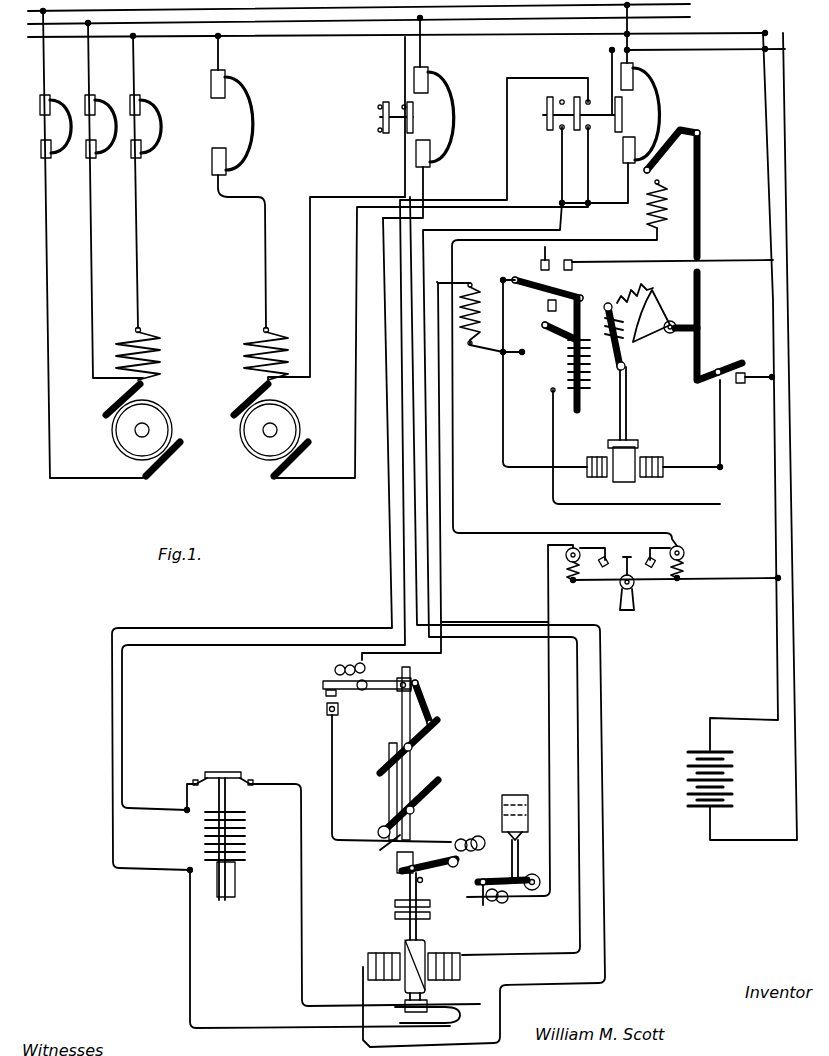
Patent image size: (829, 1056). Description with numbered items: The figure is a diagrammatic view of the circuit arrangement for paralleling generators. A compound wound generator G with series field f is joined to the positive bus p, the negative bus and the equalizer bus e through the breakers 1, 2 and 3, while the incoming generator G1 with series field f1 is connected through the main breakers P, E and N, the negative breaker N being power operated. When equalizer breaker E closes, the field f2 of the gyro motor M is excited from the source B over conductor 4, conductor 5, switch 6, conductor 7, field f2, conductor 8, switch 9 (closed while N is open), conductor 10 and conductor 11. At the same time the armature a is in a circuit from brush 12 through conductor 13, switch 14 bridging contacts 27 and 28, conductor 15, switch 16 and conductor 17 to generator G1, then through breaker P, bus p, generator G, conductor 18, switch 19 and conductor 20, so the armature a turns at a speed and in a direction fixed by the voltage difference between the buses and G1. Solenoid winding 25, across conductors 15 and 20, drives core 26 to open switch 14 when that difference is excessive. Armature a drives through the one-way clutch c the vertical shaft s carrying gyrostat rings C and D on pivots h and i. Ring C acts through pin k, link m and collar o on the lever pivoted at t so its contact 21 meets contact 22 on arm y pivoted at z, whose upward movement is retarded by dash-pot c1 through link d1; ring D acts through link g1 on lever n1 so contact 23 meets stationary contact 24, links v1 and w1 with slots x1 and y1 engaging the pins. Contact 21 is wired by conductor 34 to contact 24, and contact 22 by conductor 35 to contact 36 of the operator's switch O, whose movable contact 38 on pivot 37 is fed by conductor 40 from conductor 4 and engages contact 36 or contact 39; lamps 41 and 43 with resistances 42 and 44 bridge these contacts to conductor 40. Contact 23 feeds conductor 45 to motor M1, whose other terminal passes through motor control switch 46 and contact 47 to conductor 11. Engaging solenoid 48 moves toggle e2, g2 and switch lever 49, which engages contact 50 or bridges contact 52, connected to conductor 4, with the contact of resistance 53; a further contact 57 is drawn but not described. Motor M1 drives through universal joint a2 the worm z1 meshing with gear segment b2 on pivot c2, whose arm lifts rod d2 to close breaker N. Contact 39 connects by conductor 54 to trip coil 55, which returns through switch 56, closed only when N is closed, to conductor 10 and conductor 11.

The automatic circuit breaker 1 is at (52, 156).
The automatic circuit breaker 2 is at (97, 156).
The automatic circuit breaker 3 is at (144, 152).
The positive breaker P is at (246, 104).
The positive bus p is at (266, 36).
The equalizer bus e is at (354, 19).
The series field winding f is at (160, 340).
The series field winding f1 is at (250, 345).
The compound wound generator G is at (131, 430).
The generator G1 is at (277, 430).
The conductor 17 is at (356, 236).
The conductor 18 is at (631, 14).
The conductor 10 is at (720, 50).
The conductor 5 is at (404, 50).
The conductor 4 is at (764, 90).
The conductor 11 is at (790, 295).
The source of current B is at (690, 768).
The equalizer breaker E is at (450, 118).
The switch 19 is at (382, 120).
The switch 6 is at (414, 118).
The conductor 7 is at (421, 170).
The conductor 20 is at (388, 262).
The conductor 15 is at (520, 78).
The switch 9 is at (546, 112).
The switch 16 is at (572, 135).
The switch 56 is at (615, 122).
The negative breaker N is at (657, 96).
The vertically extending rod d2 is at (700, 212).
The trip coil 55 is at (672, 200).
The conductor 54 is at (650, 222).
The conductor 8 is at (514, 230).
The conductor 45 is at (453, 248).
The resistance 53 is at (472, 300).
The switch lever 49 is at (548, 280).
The contact 57 is at (541, 263).
The contact 52 is at (572, 261).
The contact 50 is at (548, 308).
The toggle member e2 is at (555, 334).
The engaging solenoid 48 is at (570, 372).
The electric motor M1 is at (638, 447).
The universal joint a2 is at (627, 372).
The toggle member g2 is at (610, 305).
The worm z1 is at (620, 312).
The gear segment b2 is at (654, 296).
The pivot c2 is at (669, 340).
The motor control switch 46 is at (736, 368).
The contact 47 is at (738, 383).
The lamp 41 is at (565, 555).
The resistance 42 is at (570, 578).
The contact 36 is at (596, 568).
The lamp 43 is at (686, 550).
The resistance 44 is at (690, 571).
The contact 39 is at (655, 570).
The conductor 40 is at (574, 584).
The operator's switch O is at (634, 588).
The movable contact 38 is at (628, 556).
The pivot contact 37 is at (622, 588).
The conductor 35 is at (550, 725).
The switch 14 is at (222, 772).
The contact 28 is at (194, 785).
The contact 27 is at (252, 784).
The solenoid winding 25 is at (205, 843).
The solenoid core 26 is at (234, 895).
The conductor 13 is at (301, 824).
The contact carrying lever n1 is at (370, 686).
The contact 23 is at (326, 692).
The stationary contact 24 is at (327, 706).
The conductor 34 is at (331, 755).
The vertical shaft s is at (400, 695).
The link w1 is at (388, 786).
The link g1 is at (425, 708).
The gyroscopic governor ring D is at (440, 722).
The slot x1 is at (428, 742).
The pivot i is at (404, 747).
The link v1 is at (412, 768).
The pivot h is at (425, 812).
The slot y1 is at (382, 830).
The gyroscopic governor ring C is at (365, 853).
The pivot pin k is at (455, 852).
The link m is at (397, 860).
The pivot t is at (429, 872).
The contact 21 is at (455, 868).
The contact 22 is at (502, 870).
The collar o is at (430, 879).
The clutch c is at (393, 904).
The armature a is at (428, 948).
The field winding f2 is at (368, 958).
The gyro motor M is at (462, 960).
The armature terminal 12 is at (400, 1010).
The dash-pot c1 is at (510, 795).
The link d1 is at (520, 860).
The pivot z is at (535, 876).
The arm y is at (510, 895).